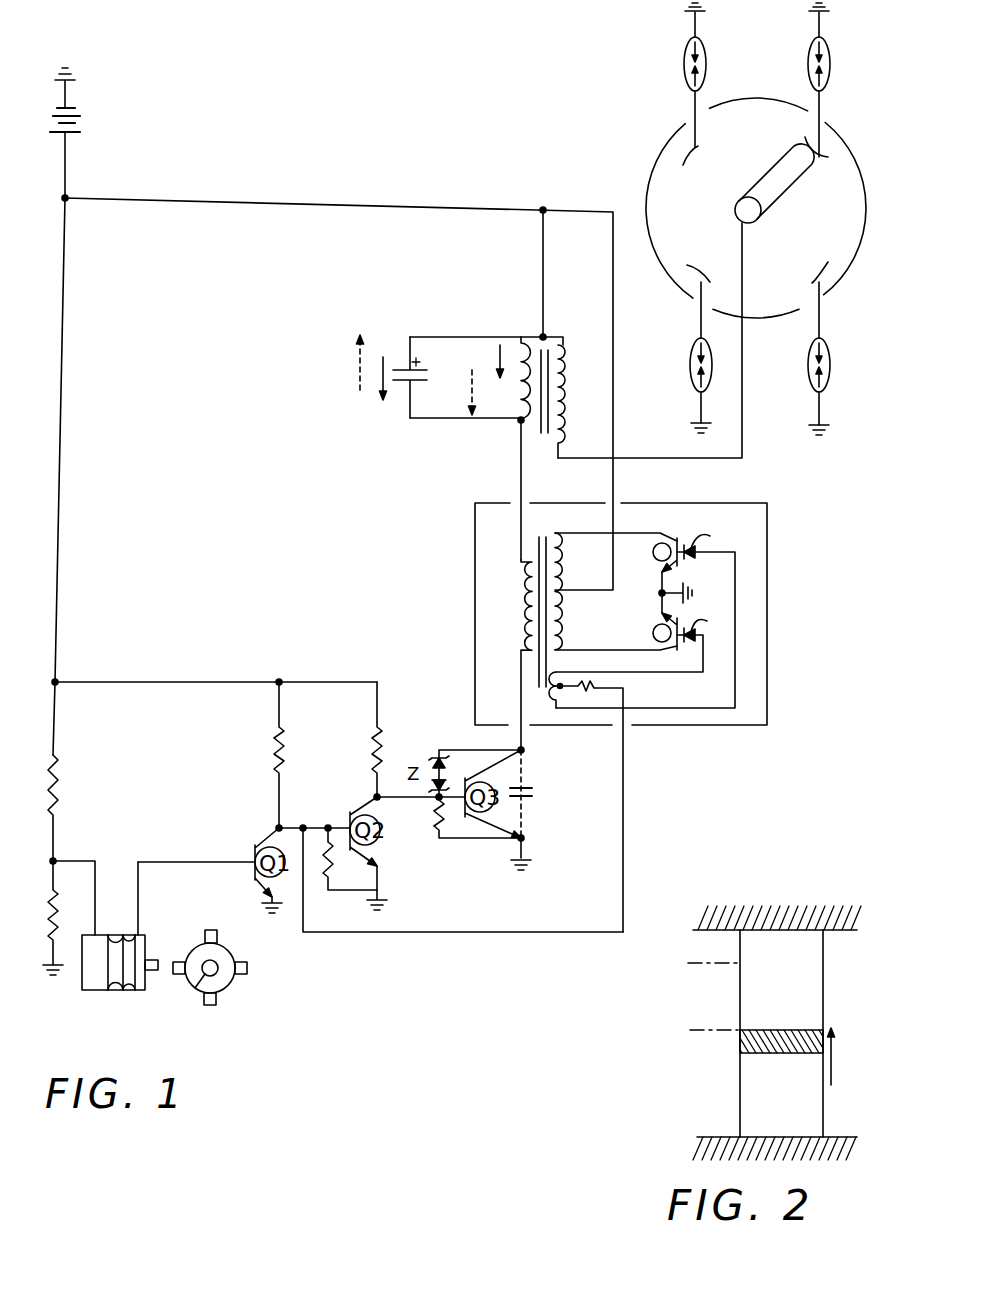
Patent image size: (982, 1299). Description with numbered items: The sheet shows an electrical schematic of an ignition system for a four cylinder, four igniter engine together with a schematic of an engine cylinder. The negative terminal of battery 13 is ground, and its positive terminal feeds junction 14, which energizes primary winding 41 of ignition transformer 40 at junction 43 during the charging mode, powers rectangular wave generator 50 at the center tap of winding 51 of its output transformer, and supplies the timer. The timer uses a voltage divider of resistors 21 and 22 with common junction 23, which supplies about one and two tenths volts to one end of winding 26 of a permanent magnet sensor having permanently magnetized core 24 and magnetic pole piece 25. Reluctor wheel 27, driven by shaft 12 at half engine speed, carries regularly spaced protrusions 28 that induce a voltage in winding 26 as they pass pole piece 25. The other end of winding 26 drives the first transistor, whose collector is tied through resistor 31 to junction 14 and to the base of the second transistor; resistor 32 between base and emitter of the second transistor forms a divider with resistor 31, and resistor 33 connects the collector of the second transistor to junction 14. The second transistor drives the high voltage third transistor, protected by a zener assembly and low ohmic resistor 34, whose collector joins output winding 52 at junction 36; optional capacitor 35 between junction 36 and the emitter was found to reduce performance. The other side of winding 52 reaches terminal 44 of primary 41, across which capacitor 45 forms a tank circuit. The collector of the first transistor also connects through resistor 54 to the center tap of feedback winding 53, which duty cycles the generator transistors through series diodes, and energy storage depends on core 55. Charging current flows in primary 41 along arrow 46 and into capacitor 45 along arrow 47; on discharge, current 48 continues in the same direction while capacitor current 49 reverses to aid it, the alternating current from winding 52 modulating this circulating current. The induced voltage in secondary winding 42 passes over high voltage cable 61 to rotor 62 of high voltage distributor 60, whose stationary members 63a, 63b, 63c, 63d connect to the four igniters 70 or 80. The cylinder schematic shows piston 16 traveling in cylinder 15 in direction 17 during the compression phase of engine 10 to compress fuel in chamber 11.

In FIG. 2, the engine 10 is at (838, 1137).
In FIG. 2, the chamber 11 is at (797, 956).
In FIG. 1, the shaft 12 is at (218, 965).
In FIG. 1, the battery 13 is at (77, 132).
In FIG. 1, the junction 14 is at (67, 196).
In FIG. 2, the cylinder 15 is at (734, 1097).
In FIG. 2, the piston 16 is at (740, 1048).
In FIG. 2, the direction 17 is at (834, 1057).
In FIG. 1, the resistor 21 is at (59, 777).
In FIG. 1, the resistor 22 is at (57, 900).
In FIG. 1, the junction 23 is at (55, 860).
In FIG. 1, the permanently magnetized core 24 is at (124, 950).
In FIG. 1, the magnetic pole piece 25 is at (152, 972).
In FIG. 1, the winding 26 is at (118, 932).
In FIG. 1, the reluctor wheel 27 is at (230, 951).
In FIG. 1, the protrusions 28 is at (205, 934).
In FIG. 1, the resistor 31 is at (273, 745).
In FIG. 1, the resistor 32 is at (332, 863).
In FIG. 1, the resistor 33 is at (372, 745).
In FIG. 1, the low ohmic resistor 34 is at (437, 810).
In FIG. 1, the capacitor 35 is at (528, 797).
In FIG. 1, the junction 36 is at (524, 750).
In FIG. 1, the ignition transformer 40 is at (461, 425).
In FIG. 1, the primary winding 41 is at (511, 392).
In FIG. 1, the secondary winding 42 is at (564, 394).
In FIG. 1, the junction 43 is at (546, 335).
In FIG. 1, the terminal 44 is at (518, 424).
In FIG. 1, the capacitor 45 is at (400, 383).
In FIG. 1, the arrow 46 is at (499, 356).
In FIG. 1, the arrow 47 is at (382, 400).
In FIG. 1, the discharge current path 48 is at (470, 398).
In FIG. 1, the discharge current 49 is at (356, 368).
In FIG. 1, the rectangular wave generator 50 is at (651, 717).
In FIG. 1, the winding 51 is at (566, 606).
In FIG. 1, the output winding 52 is at (517, 600).
In FIG. 1, the winding 53 is at (558, 708).
In FIG. 1, the resistor 54 is at (630, 689).
In FIG. 1, the core 55 is at (549, 514).
In FIG. 1, the high voltage distributor 60 is at (720, 208).
In FIG. 1, the high voltage cable 61 is at (632, 458).
In FIG. 1, the rotor 62 is at (758, 221).
In FIG. 1, the stationary member 63a is at (828, 157).
In FIG. 1, the stationary member 63b is at (812, 283).
In FIG. 1, the stationary member 63c is at (687, 265).
In FIG. 1, the stationary member 63d is at (701, 147).
In FIG. 1, the igniter 70 is at (765, 219).
In FIG. 1, the igniter 80 is at (807, 62).